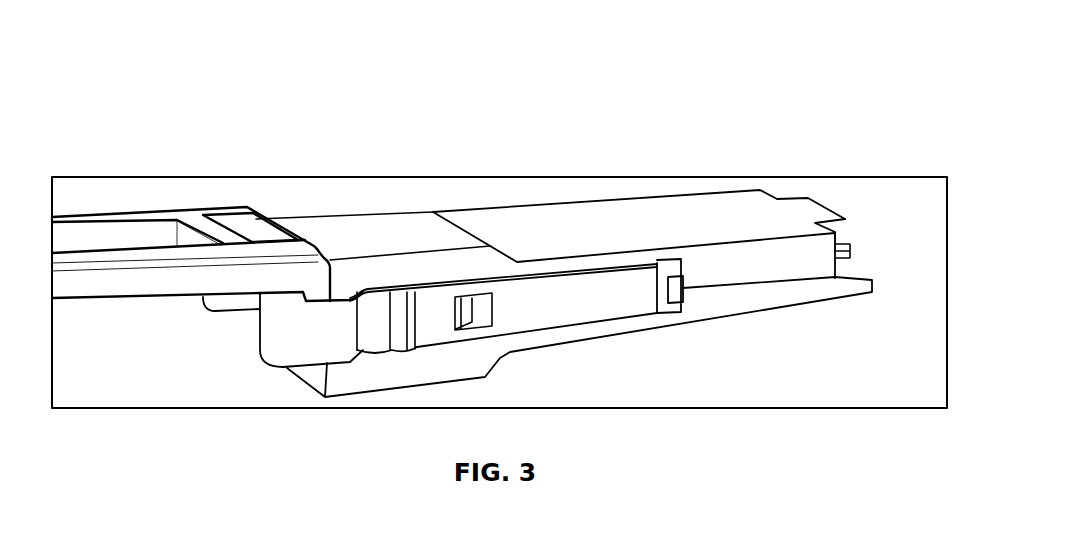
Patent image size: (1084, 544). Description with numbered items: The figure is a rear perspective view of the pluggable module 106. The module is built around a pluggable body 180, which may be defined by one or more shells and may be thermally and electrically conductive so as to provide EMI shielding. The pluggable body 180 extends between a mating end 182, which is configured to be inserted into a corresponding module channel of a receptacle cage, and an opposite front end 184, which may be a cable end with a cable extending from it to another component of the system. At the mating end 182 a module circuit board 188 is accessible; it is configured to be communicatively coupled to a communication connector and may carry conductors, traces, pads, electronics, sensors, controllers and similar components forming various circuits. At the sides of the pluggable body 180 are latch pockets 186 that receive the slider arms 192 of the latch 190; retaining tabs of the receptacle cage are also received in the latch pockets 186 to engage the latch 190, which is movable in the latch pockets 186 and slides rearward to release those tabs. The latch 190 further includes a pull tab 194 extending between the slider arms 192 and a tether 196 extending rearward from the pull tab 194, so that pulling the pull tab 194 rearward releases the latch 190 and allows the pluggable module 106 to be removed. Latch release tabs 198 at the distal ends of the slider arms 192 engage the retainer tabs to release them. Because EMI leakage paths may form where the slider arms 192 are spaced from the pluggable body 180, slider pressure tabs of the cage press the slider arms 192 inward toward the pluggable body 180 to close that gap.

The pluggable module 106 is at (548, 197).
The pluggable body 180 is at (630, 232).
The mating end 182 is at (862, 222).
The front end 184 is at (292, 370).
The latch pockets 186 is at (382, 353).
The module circuit board 188 is at (850, 254).
The latch 190 is at (559, 303).
The slider arms 192 is at (235, 303).
The pull tab 194 is at (247, 228).
The tether 196 is at (133, 218).
The latch release tabs 198 is at (684, 292).